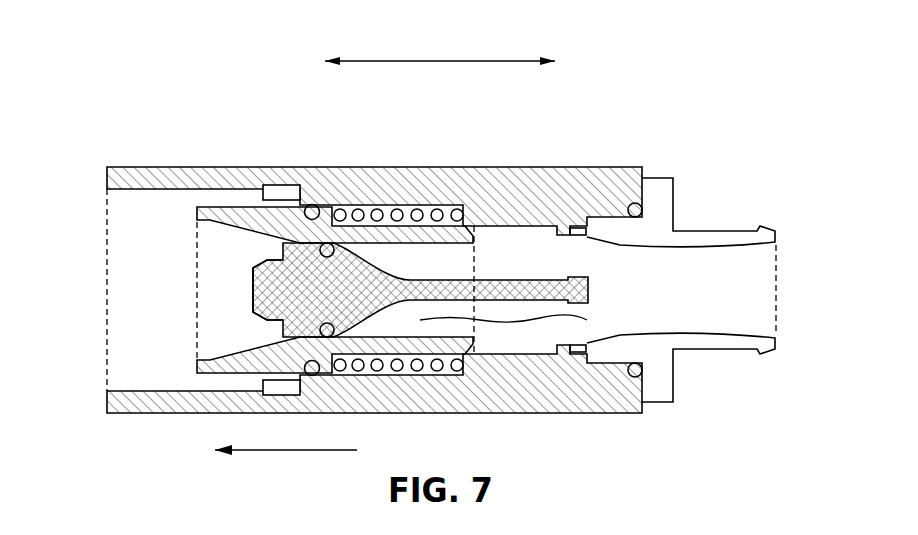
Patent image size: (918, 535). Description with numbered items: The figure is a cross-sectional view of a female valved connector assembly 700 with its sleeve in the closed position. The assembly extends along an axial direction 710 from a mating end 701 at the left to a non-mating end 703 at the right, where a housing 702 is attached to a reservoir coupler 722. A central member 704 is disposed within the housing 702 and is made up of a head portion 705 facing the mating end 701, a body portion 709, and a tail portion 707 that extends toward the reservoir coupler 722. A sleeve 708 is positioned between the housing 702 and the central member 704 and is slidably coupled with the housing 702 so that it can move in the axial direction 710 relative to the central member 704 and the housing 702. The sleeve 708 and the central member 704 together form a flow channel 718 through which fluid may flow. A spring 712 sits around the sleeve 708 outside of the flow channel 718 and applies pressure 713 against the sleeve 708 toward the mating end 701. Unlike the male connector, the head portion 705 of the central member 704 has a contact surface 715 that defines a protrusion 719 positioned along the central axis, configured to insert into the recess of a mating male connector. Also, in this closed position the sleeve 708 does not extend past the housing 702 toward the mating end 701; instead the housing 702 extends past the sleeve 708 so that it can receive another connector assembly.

The female valved connector assembly 700 is at (437, 258).
The mating end 701 is at (75, 290).
The housing 702 is at (445, 185).
The non-mating end 703 is at (802, 294).
The central member 704 is at (499, 276).
The head portion 705 is at (291, 300).
The tail portion 707 is at (500, 330).
The sleeve 708 is at (212, 207).
The body portion 709 is at (358, 287).
The axial direction 710 is at (440, 51).
The spring 712 is at (398, 375).
The pressure 713 is at (286, 477).
The contact surface 715 is at (265, 316).
The flow channel 718 is at (520, 250).
The protrusion 719 is at (257, 290).
The reservoir coupler 722 is at (661, 190).